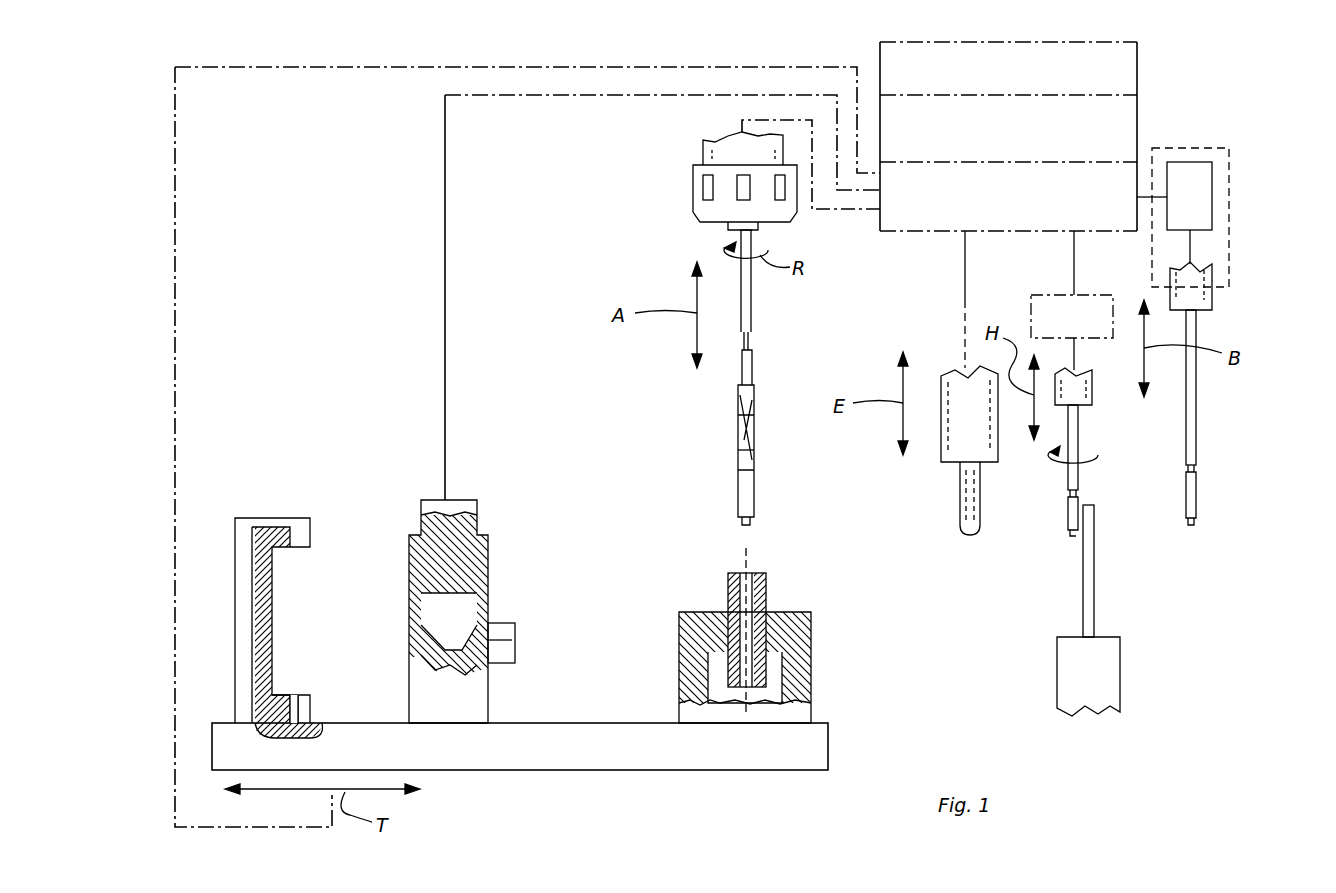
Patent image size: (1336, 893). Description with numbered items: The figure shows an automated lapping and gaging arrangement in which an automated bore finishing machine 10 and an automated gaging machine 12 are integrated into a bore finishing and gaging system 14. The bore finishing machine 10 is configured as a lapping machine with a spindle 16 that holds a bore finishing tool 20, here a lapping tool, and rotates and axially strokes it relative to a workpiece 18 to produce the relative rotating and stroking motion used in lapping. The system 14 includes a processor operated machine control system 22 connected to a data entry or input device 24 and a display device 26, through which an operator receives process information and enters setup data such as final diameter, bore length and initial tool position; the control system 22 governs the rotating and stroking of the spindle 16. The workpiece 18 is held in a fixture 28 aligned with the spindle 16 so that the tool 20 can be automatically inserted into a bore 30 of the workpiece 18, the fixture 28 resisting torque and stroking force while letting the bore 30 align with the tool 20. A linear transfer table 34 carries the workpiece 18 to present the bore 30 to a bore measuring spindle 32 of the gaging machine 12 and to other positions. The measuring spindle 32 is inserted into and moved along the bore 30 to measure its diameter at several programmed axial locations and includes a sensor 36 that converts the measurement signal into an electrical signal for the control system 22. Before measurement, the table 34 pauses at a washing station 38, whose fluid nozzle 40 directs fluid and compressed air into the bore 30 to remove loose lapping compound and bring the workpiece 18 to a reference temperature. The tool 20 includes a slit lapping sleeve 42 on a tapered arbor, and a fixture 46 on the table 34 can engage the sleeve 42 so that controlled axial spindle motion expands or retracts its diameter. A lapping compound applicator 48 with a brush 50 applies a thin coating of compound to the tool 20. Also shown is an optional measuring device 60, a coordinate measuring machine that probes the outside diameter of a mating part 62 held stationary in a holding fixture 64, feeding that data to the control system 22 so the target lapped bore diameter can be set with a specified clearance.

The automated bore finishing machine 10 is at (693, 192).
The automated gaging machine 12 is at (1230, 197).
The bore finishing and gaging system 14 is at (1222, 33).
The spindle 16 is at (738, 232).
The workpiece 18 is at (766, 600).
The bore finishing tool 20 is at (752, 360).
The machine control system 22 is at (1105, 40).
The data entry or input device 24 is at (1137, 103).
The display device 26 is at (1137, 72).
The fixture 28 is at (811, 655).
The bore 30 is at (742, 572).
The bore measuring spindle 32 is at (1196, 440).
The linear transfer table 34 is at (828, 748).
The sensor 36 is at (1214, 172).
The washing station 38 is at (946, 466).
The fluid nozzle 40 is at (982, 530).
The lapping sleeve 42 is at (754, 468).
The fixture 46 is at (272, 530).
The lapping compound applicator 48 is at (409, 540).
The brush 50 is at (510, 625).
The measuring device 60 is at (1070, 503).
The mating part 62 is at (1094, 600).
The holding fixture 64 is at (1120, 672).